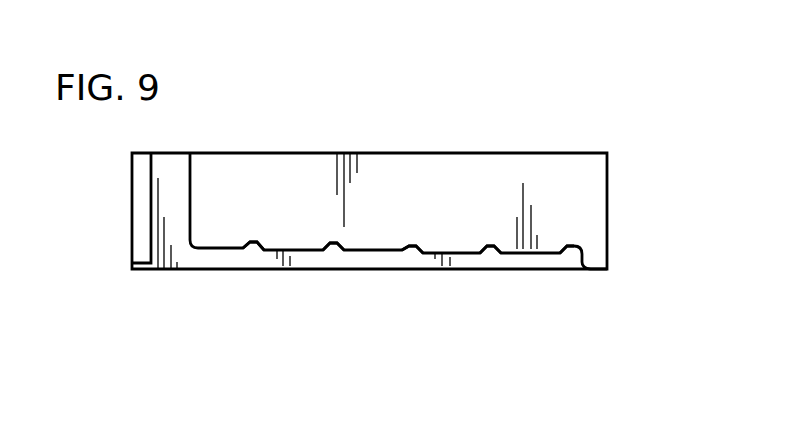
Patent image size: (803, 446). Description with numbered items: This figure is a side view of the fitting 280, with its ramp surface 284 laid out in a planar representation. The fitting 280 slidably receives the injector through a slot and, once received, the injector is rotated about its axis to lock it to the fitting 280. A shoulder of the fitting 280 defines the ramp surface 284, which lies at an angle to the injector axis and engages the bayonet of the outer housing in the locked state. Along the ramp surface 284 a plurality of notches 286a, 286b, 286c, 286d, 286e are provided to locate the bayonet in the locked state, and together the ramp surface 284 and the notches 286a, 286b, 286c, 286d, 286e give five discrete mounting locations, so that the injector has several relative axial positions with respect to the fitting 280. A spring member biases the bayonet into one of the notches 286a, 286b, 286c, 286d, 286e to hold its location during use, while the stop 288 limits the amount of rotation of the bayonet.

The fitting 280 is at (607, 167).
The ramp surface 284 is at (380, 252).
The notch 286a is at (253, 244).
The notch 286b is at (333, 245).
The notch 286c is at (412, 248).
The notch 286d is at (490, 248).
The notch 286e is at (570, 248).
The stop 288 is at (607, 270).